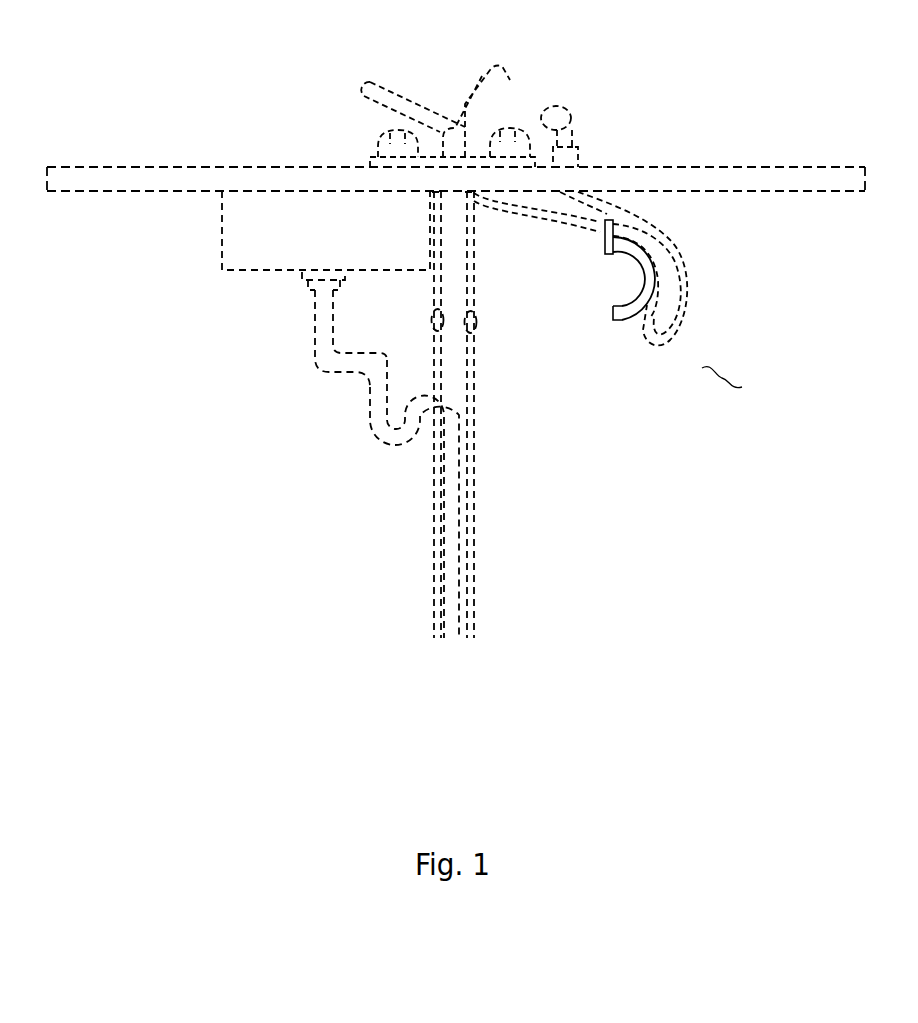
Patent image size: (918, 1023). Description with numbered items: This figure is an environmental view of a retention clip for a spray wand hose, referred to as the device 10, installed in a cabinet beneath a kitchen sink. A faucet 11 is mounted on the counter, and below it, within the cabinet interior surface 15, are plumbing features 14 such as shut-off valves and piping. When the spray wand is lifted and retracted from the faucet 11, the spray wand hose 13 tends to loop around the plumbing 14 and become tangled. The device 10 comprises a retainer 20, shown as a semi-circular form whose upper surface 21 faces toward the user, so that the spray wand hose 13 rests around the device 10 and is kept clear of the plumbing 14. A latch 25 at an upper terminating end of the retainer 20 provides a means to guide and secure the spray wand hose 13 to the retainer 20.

The retention clip for a spray wand hose 10 is at (664, 266).
The faucet 11 is at (477, 90).
The spray wand hose 13 is at (657, 228).
The plumbing features 14 is at (467, 333).
The cabinet interior surface 15 is at (513, 218).
The retainer 20 is at (592, 315).
The upper surface 21 is at (617, 313).
The latch 25 is at (565, 110).